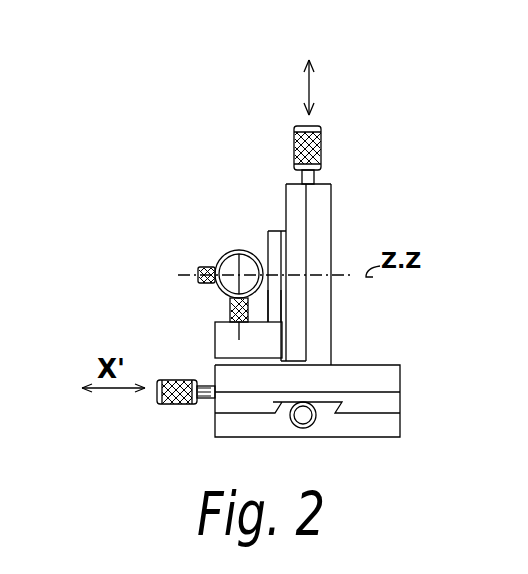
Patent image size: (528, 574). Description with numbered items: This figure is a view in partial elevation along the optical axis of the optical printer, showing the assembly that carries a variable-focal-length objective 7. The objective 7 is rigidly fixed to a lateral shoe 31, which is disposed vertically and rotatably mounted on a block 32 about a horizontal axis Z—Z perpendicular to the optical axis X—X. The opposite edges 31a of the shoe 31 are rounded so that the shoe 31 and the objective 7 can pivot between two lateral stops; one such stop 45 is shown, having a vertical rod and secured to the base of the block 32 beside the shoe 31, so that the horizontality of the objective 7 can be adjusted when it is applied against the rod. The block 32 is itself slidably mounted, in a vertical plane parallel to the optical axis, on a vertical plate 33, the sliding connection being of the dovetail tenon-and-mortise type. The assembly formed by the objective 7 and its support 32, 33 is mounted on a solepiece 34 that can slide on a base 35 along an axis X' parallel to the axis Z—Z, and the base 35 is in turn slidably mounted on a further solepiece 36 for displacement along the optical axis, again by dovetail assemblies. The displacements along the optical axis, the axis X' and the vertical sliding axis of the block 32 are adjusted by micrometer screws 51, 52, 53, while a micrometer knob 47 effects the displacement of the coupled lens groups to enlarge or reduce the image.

The objective 7 is at (239, 249).
The lateral shoe 31 is at (275, 231).
The opposite edges of the shoe 31a is at (275, 298).
The block 32 is at (296, 205).
The vertical plate 33 is at (323, 236).
The solepiece 34 is at (372, 378).
The base 35 is at (390, 407).
The solepiece 36 is at (362, 425).
The lateral stop 45 is at (222, 311).
The micrometer knob 47 is at (198, 273).
The micrometer screw 51 is at (322, 145).
The micrometer screw 52 is at (172, 405).
The micrometer screw 53 is at (302, 416).